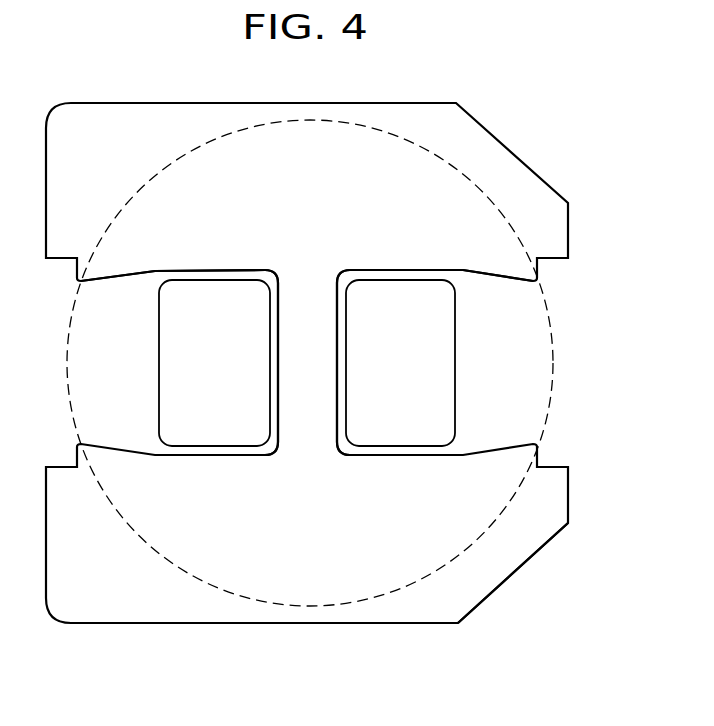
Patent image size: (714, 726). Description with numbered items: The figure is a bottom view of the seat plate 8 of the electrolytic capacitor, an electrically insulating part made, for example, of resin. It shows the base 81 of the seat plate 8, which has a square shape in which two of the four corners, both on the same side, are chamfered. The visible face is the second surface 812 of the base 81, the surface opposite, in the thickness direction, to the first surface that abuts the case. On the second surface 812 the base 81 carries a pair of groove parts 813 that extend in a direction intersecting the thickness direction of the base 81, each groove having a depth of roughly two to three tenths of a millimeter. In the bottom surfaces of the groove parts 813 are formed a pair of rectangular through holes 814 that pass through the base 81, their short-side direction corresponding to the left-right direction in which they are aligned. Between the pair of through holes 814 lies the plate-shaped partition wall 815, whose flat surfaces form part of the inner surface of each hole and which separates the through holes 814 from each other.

The seat plate 8 is at (524, 135).
The base 81 is at (413, 118).
The second surface 812 is at (520, 542).
The groove parts 813 is at (108, 277).
The through holes 814 is at (183, 382).
The partition wall 815 is at (318, 322).